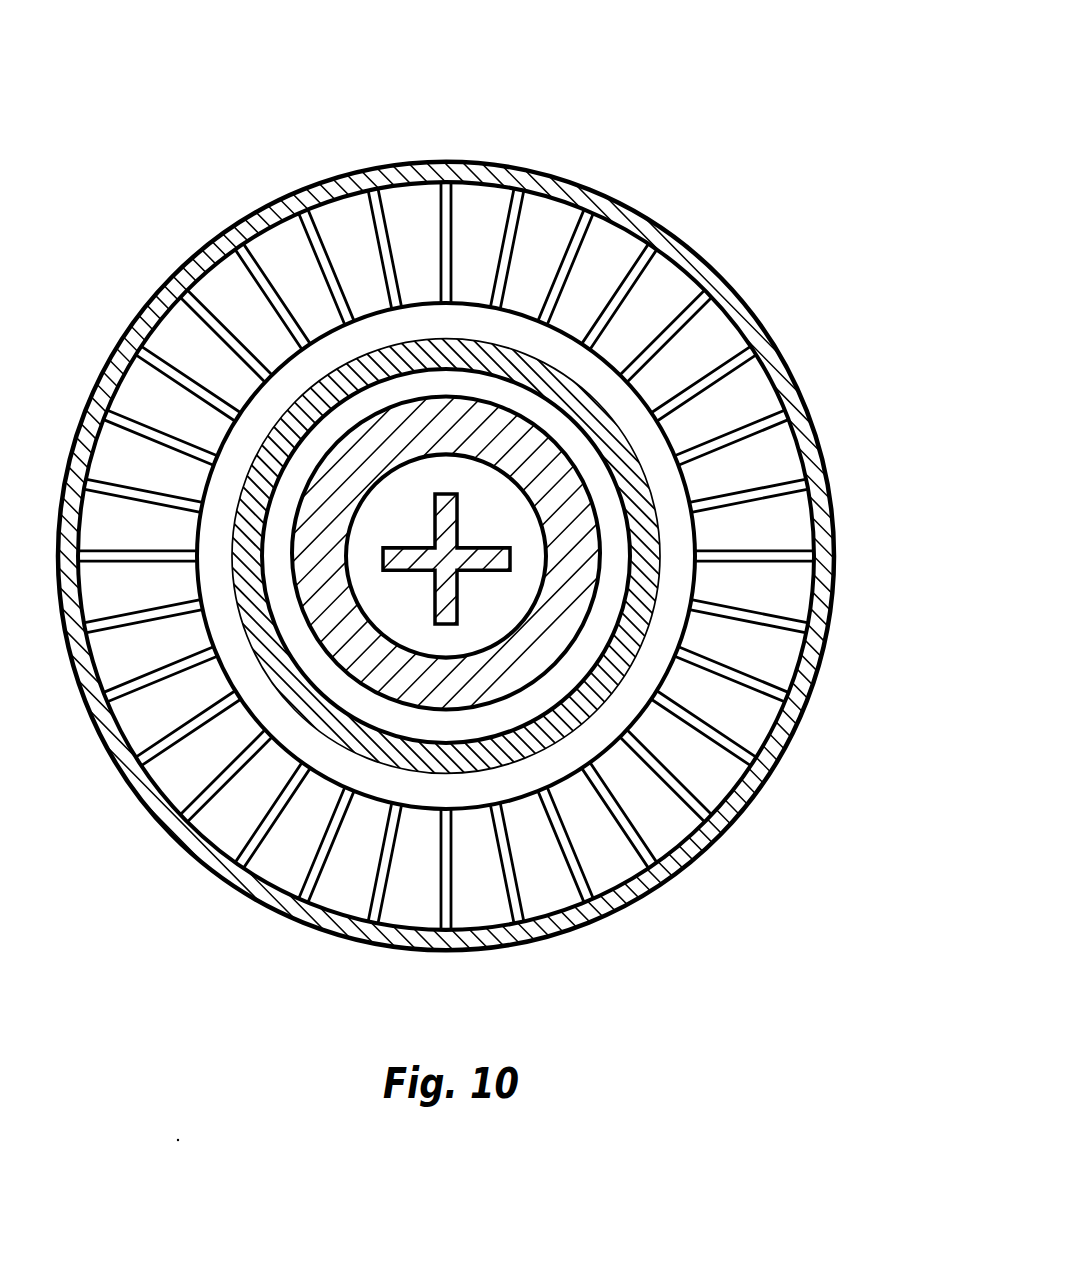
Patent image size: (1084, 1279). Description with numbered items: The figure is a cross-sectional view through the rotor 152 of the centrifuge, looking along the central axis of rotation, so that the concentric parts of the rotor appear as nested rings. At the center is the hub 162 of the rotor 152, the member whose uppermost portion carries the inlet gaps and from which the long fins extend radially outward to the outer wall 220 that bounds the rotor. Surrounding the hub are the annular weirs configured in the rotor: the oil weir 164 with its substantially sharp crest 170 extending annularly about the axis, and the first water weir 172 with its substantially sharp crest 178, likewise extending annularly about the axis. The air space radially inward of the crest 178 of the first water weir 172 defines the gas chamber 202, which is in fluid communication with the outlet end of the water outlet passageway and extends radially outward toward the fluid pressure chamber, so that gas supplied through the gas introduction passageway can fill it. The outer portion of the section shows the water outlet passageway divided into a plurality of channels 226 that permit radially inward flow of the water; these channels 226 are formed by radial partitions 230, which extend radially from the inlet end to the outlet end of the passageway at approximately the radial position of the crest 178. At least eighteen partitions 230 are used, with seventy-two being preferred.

The rotor 152 is at (602, 155).
The hub 162 is at (477, 680).
The oil weir 164 is at (620, 663).
The crest 170 is at (580, 700).
The first water weir 172 is at (710, 352).
The crest 178 is at (670, 430).
The gas chamber 202 is at (670, 483).
The outer wall 220 is at (780, 737).
The channels 226 is at (650, 287).
The radial partitions 230 is at (768, 563).